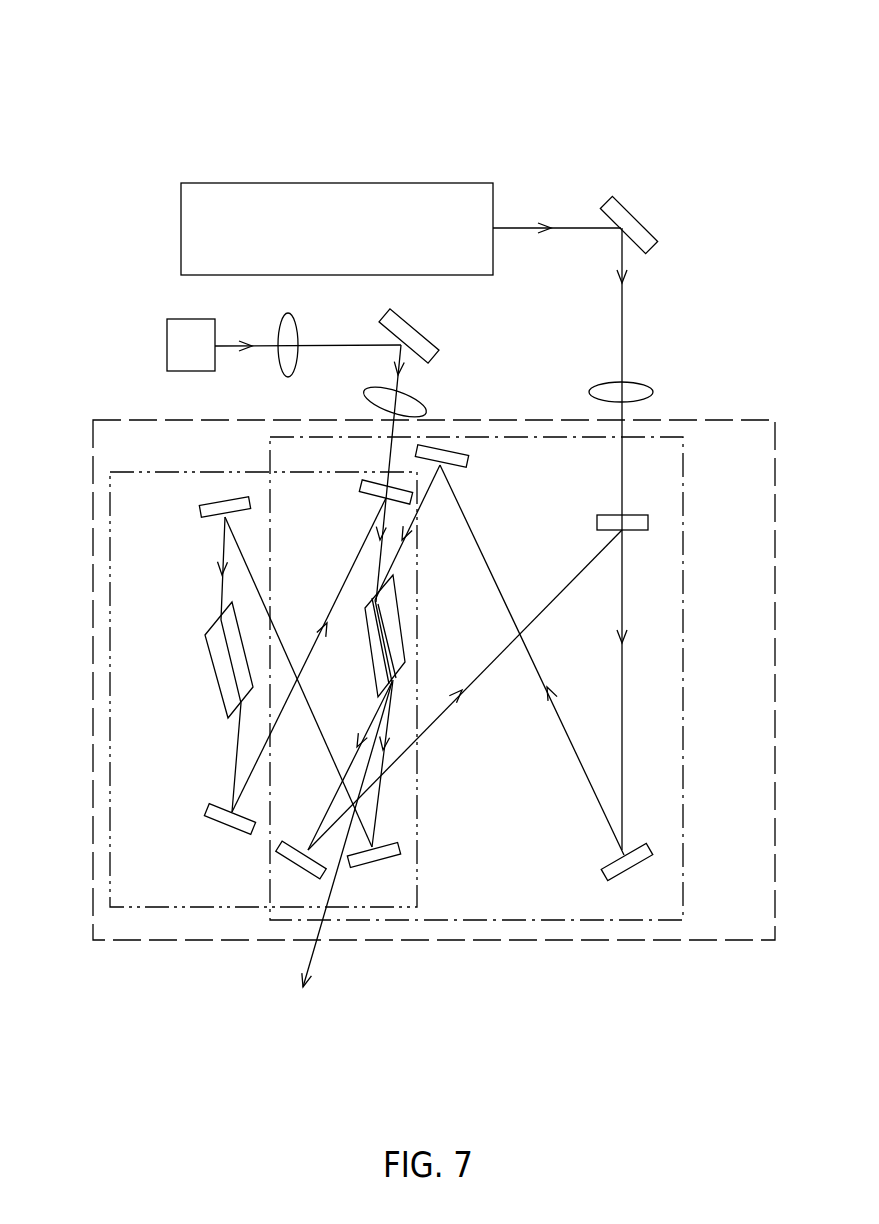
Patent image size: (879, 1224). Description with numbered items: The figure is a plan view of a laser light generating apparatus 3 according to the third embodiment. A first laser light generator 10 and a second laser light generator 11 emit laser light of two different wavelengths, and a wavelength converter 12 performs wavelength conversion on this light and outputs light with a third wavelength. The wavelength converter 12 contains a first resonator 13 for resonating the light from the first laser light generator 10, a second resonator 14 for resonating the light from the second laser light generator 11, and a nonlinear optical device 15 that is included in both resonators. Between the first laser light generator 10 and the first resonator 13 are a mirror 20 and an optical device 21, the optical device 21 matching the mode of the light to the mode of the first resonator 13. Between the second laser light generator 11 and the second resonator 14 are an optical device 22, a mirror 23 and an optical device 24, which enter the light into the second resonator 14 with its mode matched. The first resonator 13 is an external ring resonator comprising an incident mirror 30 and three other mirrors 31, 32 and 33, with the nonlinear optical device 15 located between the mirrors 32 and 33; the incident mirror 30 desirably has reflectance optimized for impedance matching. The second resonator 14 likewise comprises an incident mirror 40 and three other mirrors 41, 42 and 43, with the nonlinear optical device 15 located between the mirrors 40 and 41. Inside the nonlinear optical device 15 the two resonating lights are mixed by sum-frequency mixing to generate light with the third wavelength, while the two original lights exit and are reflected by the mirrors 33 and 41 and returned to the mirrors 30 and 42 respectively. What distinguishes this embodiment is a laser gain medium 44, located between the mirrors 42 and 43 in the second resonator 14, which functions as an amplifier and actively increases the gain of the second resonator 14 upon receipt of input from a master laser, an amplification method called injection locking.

The laser light generating apparatus 3 is at (107, 112).
The first laser light generator 10 is at (472, 183).
The second laser light generator 11 is at (167, 354).
The wavelength converter 12 is at (93, 497).
The first resonator 13 is at (587, 922).
The second resonator 14 is at (185, 908).
The nonlinear optical device 15 is at (373, 674).
The mirror 20 is at (655, 233).
The optical device 21 is at (654, 390).
The optical device 22 is at (300, 325).
The mirror 23 is at (440, 340).
The optical device 24 is at (428, 404).
The incident mirror 30 is at (597, 520).
The mirror 31 is at (602, 875).
The mirror 32 is at (470, 463).
The mirror 33 is at (291, 840).
The incident mirror 40 is at (359, 491).
The mirror 41 is at (390, 863).
The mirror 42 is at (198, 512).
The mirror 43 is at (237, 838).
The laser gain medium 44 is at (215, 684).